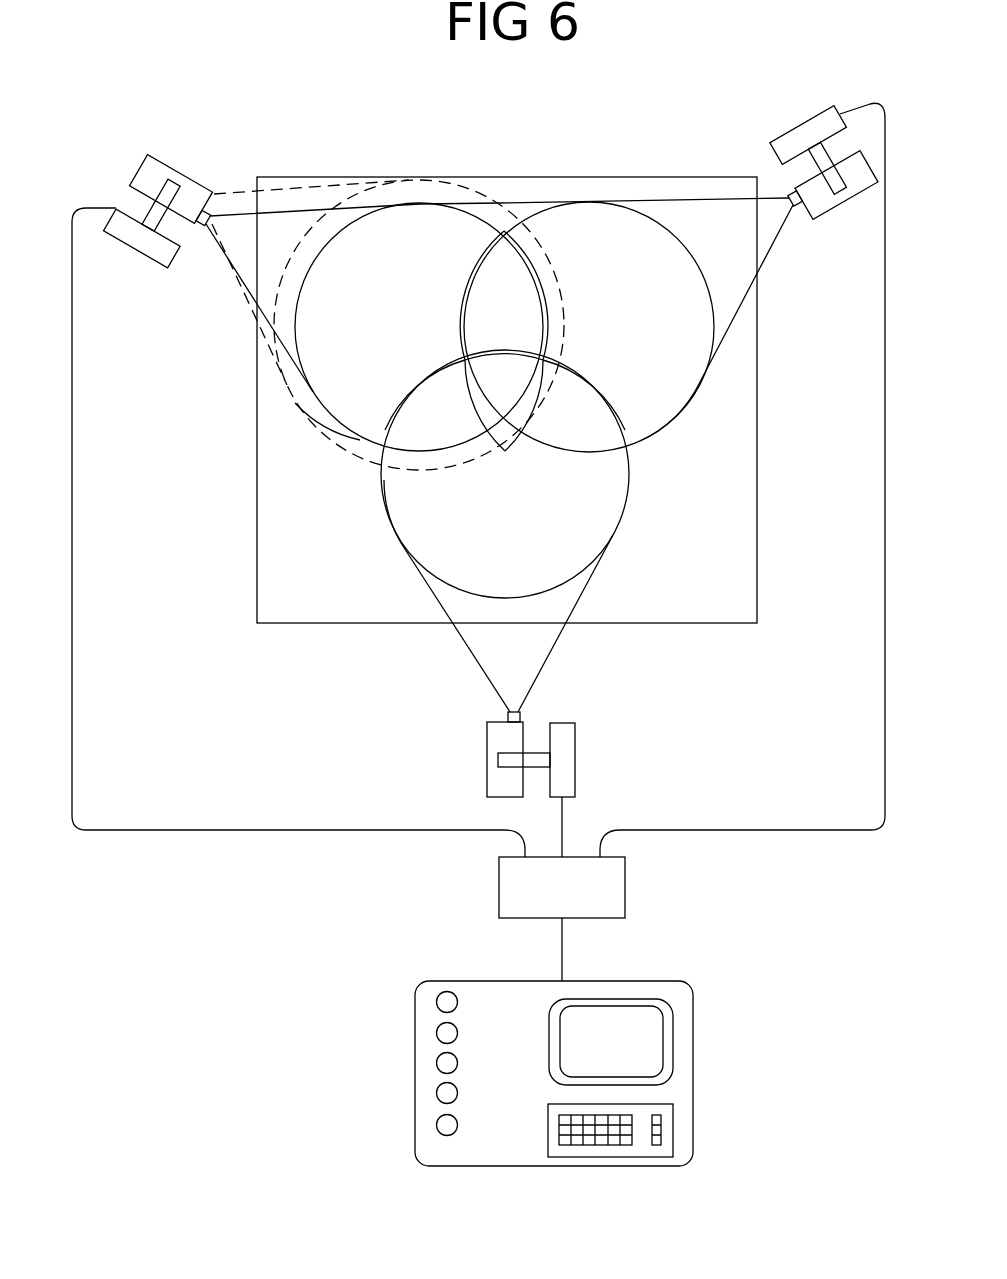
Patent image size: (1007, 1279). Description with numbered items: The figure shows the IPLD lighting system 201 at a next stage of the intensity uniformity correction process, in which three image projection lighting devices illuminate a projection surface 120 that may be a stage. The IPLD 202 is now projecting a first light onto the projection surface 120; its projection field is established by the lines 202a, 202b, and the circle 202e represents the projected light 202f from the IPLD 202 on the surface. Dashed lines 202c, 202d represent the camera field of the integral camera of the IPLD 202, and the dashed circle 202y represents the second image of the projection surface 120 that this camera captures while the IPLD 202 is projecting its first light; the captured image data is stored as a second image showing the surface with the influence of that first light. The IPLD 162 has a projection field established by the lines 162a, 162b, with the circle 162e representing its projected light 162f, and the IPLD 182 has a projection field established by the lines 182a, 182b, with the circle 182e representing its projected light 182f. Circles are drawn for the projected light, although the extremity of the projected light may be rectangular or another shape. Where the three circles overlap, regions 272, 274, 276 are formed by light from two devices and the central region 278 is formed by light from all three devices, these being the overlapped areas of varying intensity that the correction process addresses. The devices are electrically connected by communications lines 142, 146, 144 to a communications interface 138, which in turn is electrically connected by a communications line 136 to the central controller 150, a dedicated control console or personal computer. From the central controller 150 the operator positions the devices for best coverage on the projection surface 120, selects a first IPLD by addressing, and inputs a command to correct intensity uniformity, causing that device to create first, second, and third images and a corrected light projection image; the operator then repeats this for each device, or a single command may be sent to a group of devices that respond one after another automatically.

The IPLD lighting system 201 is at (182, 58).
The IPLD 202 is at (135, 158).
The projection field line 202a is at (213, 248).
The projection field line 202b is at (237, 206).
The camera field dashed line 202c is at (268, 348).
The camera field dashed line 202d is at (302, 188).
The circle of projected light 202e is at (328, 417).
The projected light 202f is at (403, 326).
The captured camera image 202y is at (478, 193).
The projection surface 120 is at (547, 177).
The IPLD 162 is at (802, 120).
The projection field line 162a is at (768, 273).
The projection field line 162b is at (713, 190).
The circle of projected light 162e is at (663, 437).
The projected light 162f is at (670, 326).
The IPLD 182 is at (465, 775).
The projection field line 182a is at (452, 643).
The projection field line 182b is at (560, 655).
The circle of projected light 182e is at (385, 509).
The projected light 182f is at (533, 539).
The overlap region of focal regions 202f and 182f 272 is at (416, 421).
The overlap region of focal regions 162f and 182f 274 is at (550, 424).
The overlap region of focal regions 202f and 162f 276 is at (481, 313).
The common overlap region of all focal regions 278 is at (481, 378).
The communications line 142 is at (292, 833).
The communications line 144 is at (570, 823).
The communications line 146 is at (683, 834).
The communications interface 138 is at (498, 897).
The communications line 136 is at (567, 952).
The central controller 150 is at (412, 1073).